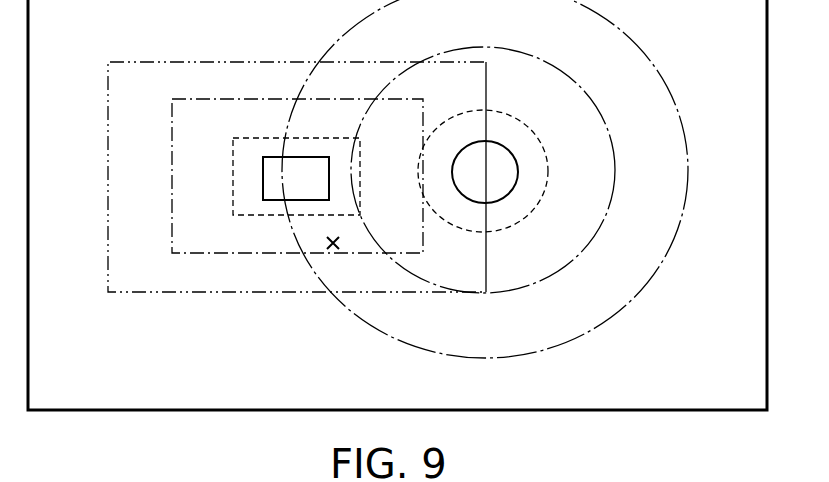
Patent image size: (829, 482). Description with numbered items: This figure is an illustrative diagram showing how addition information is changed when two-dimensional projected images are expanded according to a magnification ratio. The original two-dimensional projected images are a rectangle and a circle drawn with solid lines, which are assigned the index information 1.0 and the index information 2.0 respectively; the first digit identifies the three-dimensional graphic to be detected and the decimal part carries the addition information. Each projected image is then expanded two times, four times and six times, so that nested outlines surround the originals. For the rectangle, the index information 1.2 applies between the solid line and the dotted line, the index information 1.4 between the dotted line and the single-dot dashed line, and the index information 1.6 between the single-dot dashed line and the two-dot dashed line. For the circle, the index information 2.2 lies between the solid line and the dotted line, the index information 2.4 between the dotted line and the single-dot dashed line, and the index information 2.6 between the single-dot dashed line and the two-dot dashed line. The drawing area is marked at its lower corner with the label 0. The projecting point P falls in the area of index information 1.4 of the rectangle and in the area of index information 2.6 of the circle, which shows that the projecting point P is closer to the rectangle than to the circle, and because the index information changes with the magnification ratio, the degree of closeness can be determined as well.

The origin 0 is at (397, 205).
The index information of the original rectangle 1.0 is at (277, 172).
The index information of the rectangle expanded two times 1.2 is at (247, 187).
The index information of the rectangle expanded four times 1.4 is at (193, 235).
The index information of the rectangle expanded six times 1.6 is at (133, 285).
The index information of the original circle 2.0 is at (498, 168).
The index information of the circle expanded two times 2.2 is at (542, 178).
The index information of the circle expanded four times 2.4 is at (570, 225).
The index information of the circle expanded six times 2.6 is at (585, 302).
The projecting point P is at (335, 250).